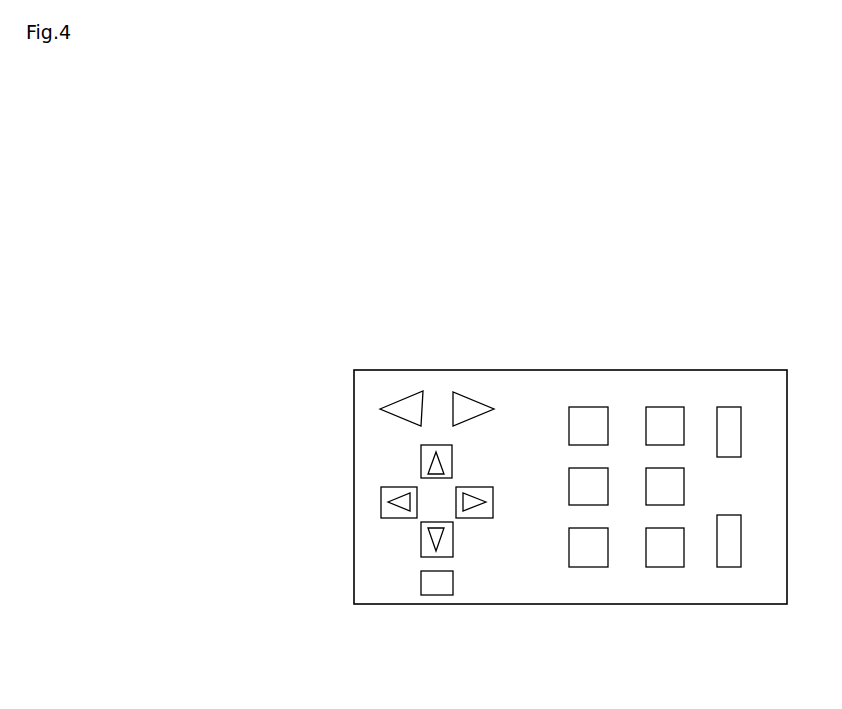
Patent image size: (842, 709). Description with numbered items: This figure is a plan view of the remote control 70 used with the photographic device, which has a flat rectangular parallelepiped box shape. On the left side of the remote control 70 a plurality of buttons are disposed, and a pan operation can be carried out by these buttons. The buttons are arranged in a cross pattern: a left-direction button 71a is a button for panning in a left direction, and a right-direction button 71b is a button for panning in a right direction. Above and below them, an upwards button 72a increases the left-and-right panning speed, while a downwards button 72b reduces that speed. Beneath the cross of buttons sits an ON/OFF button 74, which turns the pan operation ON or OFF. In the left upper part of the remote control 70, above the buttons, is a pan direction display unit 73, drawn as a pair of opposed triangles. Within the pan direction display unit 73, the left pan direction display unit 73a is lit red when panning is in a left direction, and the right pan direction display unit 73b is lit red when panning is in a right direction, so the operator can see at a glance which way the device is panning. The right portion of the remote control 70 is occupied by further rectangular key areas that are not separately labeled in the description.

The remote control 70 is at (685, 361).
The left-direction button 71a is at (381, 507).
The right-direction button 71b is at (487, 512).
The upwards button 72a is at (428, 455).
The downwards button 72b is at (423, 550).
The pan direction display unit 73 is at (433, 397).
The left pan direction display unit 73a is at (402, 400).
The right pan direction display unit 73b is at (465, 400).
The ON/OFF button 74 is at (443, 587).